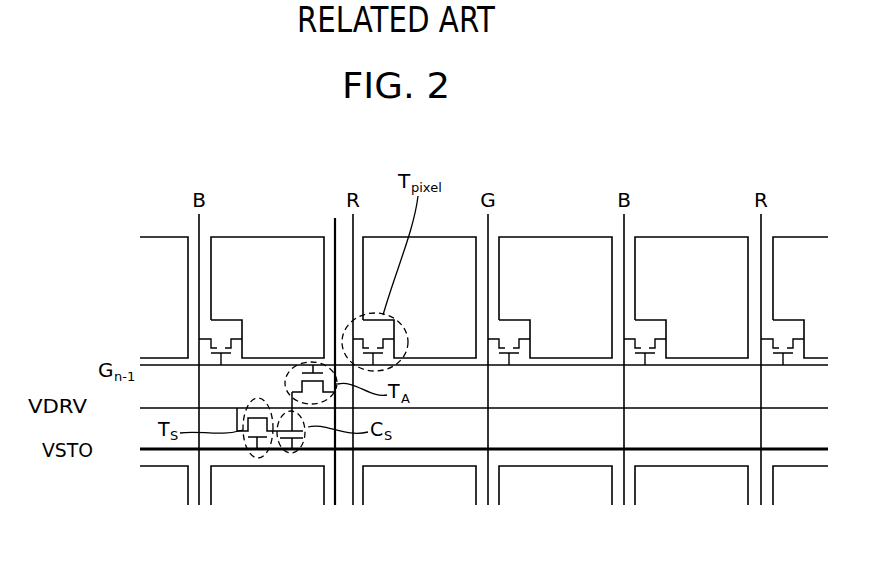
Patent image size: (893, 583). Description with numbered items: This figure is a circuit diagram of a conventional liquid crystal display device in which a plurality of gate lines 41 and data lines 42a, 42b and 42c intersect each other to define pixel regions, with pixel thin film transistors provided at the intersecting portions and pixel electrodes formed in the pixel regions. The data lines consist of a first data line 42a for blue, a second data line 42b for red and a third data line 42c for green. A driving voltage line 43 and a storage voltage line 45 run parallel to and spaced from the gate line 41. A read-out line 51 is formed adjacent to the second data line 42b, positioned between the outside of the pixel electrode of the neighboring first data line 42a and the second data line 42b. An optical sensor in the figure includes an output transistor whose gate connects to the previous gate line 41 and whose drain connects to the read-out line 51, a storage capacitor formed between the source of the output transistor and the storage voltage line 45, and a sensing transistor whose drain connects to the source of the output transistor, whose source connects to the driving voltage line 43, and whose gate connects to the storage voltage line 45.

The gate line 41 is at (153, 358).
The driving voltage line 43 is at (148, 407).
The storage voltage line 45 is at (152, 451).
The read-out line 51 is at (335, 218).
The first data line 42a is at (200, 498).
The second data line 42b is at (353, 498).
The third data line 42c is at (488, 498).